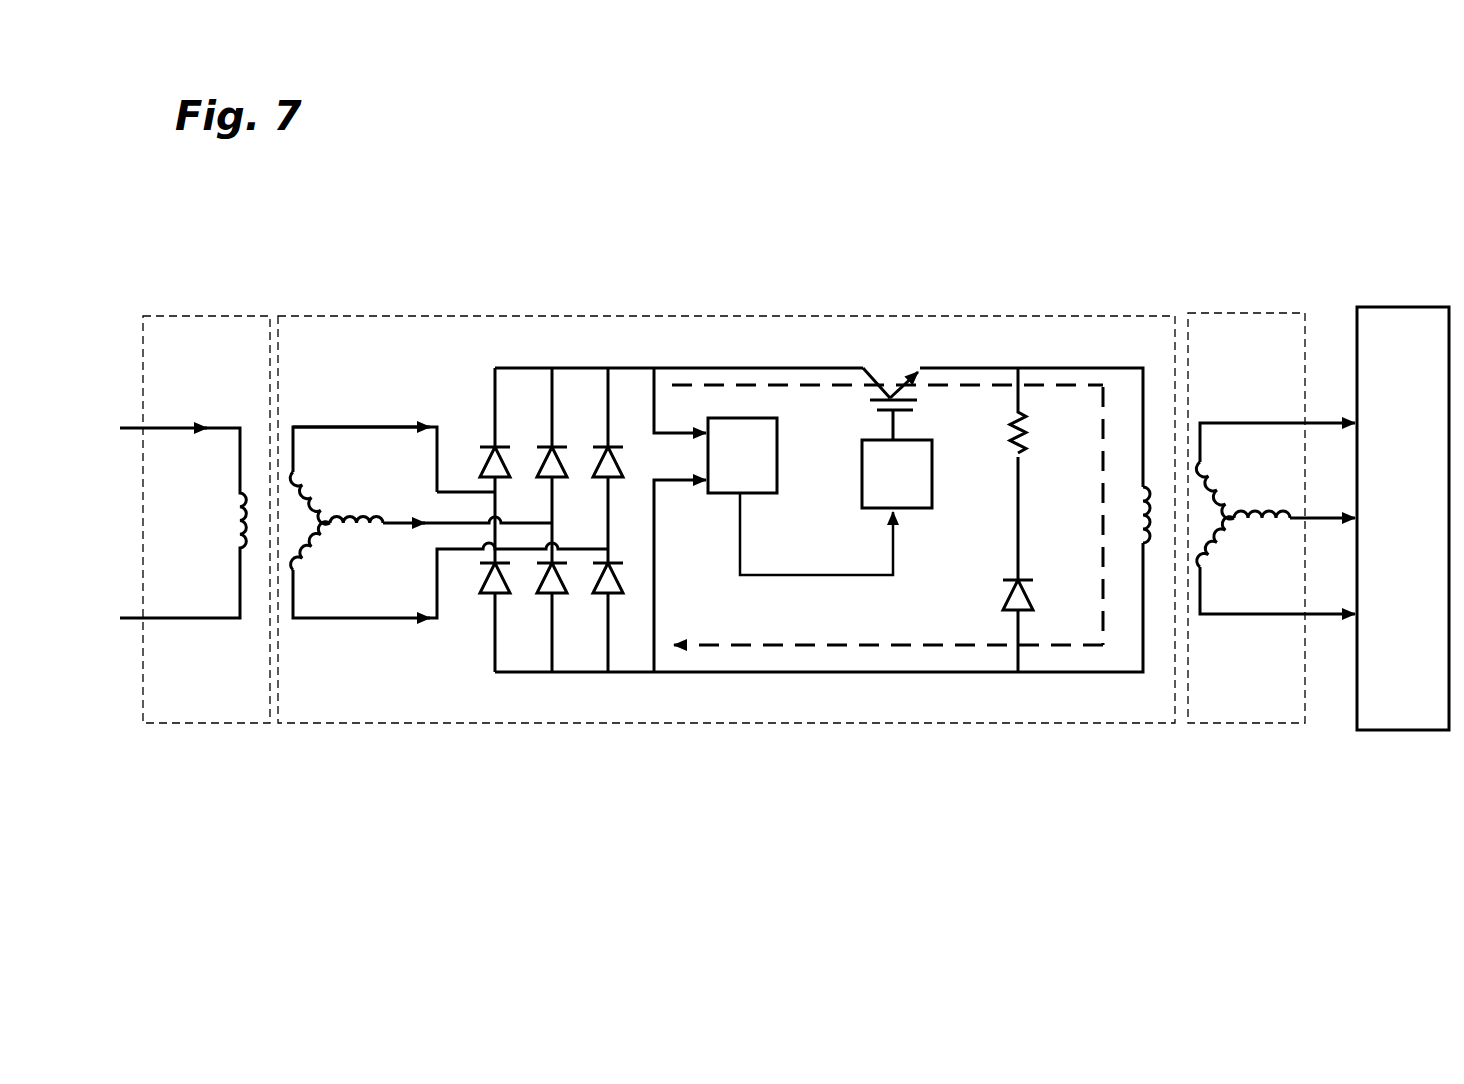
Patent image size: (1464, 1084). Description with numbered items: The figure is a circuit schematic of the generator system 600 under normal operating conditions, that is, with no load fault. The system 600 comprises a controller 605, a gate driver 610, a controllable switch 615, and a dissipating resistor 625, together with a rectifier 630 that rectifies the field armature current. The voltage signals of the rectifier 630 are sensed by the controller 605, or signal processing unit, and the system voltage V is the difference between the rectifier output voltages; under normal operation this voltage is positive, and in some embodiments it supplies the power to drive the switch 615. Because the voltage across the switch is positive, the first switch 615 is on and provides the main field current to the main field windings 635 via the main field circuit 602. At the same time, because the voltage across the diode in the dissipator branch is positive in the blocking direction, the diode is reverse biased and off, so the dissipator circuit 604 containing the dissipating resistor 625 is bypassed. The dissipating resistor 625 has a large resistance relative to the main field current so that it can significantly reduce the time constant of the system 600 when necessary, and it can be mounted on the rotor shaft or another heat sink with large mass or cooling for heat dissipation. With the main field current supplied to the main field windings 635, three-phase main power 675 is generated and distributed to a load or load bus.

The system 600 is at (483, 203).
The main field circuit 602 is at (992, 404).
The dissipator circuit 604 is at (1087, 424).
The controller 605 is at (742, 455).
The gate driver 610 is at (836, 507).
The controllable switch 615 is at (868, 368).
The dissipating resistor 625 is at (1010, 440).
The rectifier 630 is at (483, 626).
The main field windings 635 is at (1141, 538).
The three-phase main power 675 is at (1403, 518).